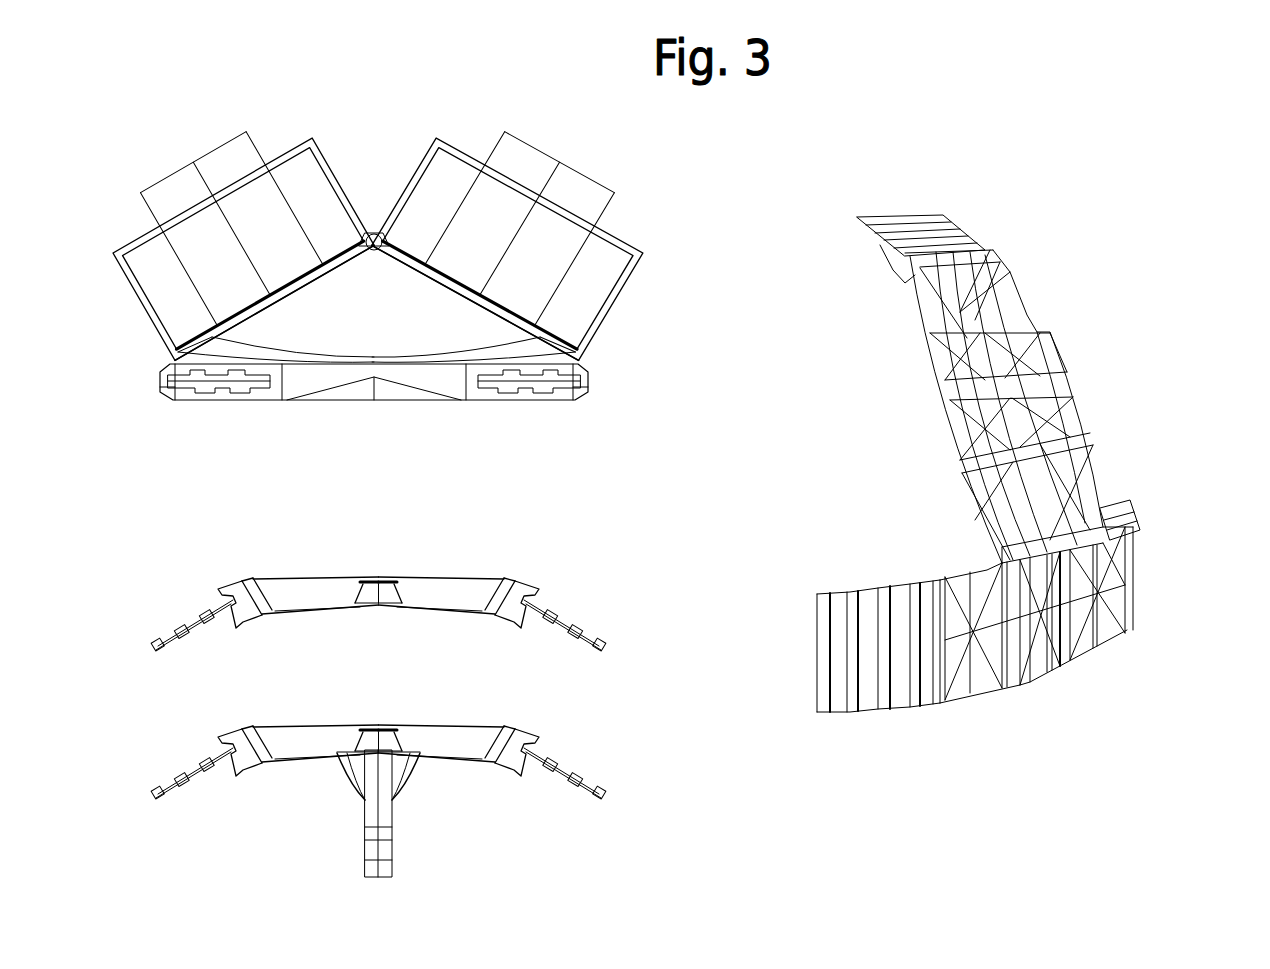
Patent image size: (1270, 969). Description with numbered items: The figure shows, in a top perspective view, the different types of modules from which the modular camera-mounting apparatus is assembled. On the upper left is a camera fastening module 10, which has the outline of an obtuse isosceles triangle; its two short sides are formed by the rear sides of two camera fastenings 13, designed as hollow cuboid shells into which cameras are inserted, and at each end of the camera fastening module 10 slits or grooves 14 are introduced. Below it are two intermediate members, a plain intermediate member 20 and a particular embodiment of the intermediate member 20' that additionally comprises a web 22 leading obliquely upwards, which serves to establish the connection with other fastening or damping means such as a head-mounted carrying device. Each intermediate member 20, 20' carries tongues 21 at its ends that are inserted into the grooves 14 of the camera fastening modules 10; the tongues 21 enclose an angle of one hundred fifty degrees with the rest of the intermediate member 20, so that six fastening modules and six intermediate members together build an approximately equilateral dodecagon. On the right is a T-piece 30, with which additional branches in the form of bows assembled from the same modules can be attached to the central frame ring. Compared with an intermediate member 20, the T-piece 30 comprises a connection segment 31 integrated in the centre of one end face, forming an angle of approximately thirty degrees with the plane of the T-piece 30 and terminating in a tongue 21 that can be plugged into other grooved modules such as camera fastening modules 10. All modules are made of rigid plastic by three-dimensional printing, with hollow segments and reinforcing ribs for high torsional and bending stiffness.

The camera fastening module 10 is at (378, 261).
The camera fastening 13 is at (444, 212).
The slit or groove 14 is at (223, 378).
The intermediate member 20 is at (380, 600).
The intermediate member with web 20' is at (389, 810).
The tongue 21 is at (158, 650).
The web 22 is at (370, 817).
The T-piece 30 is at (1025, 476).
The connection segment 31 is at (1022, 417).